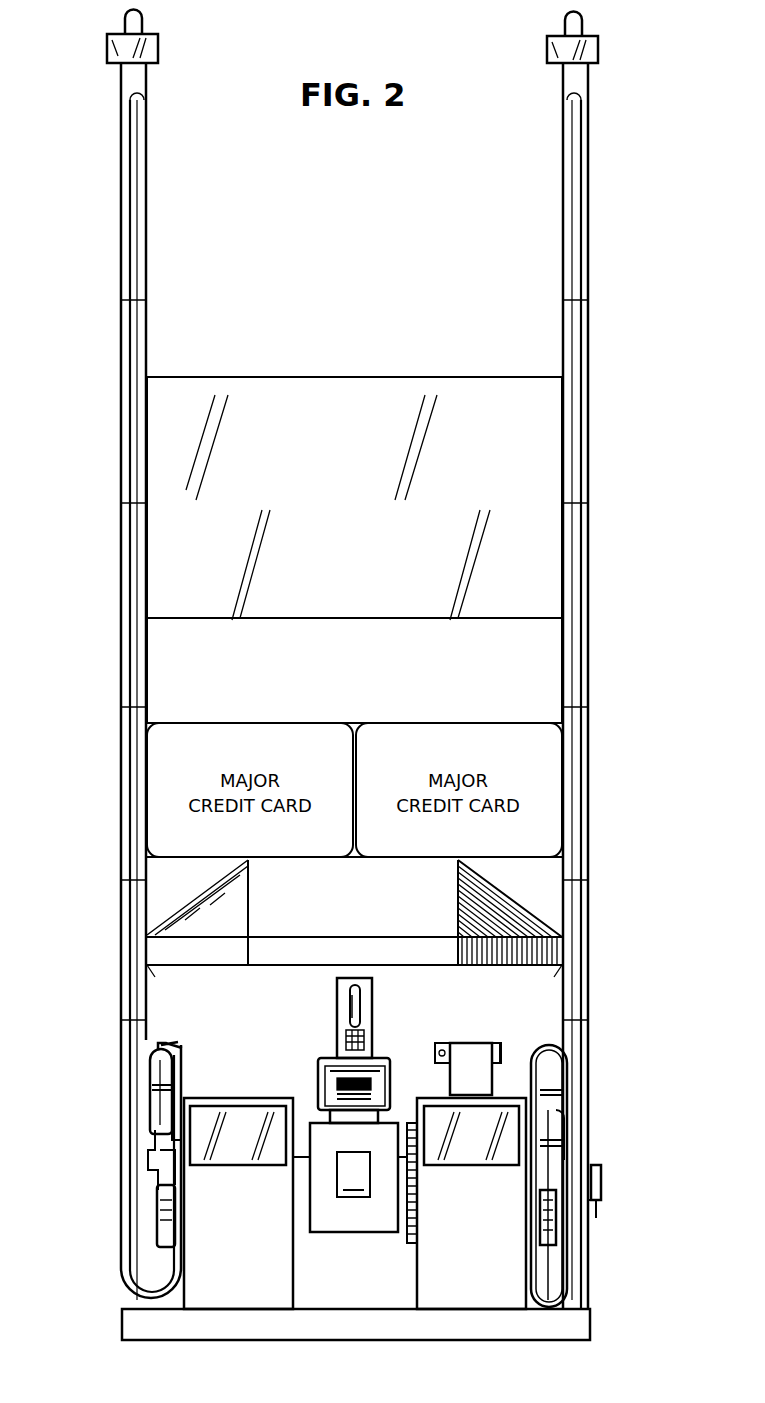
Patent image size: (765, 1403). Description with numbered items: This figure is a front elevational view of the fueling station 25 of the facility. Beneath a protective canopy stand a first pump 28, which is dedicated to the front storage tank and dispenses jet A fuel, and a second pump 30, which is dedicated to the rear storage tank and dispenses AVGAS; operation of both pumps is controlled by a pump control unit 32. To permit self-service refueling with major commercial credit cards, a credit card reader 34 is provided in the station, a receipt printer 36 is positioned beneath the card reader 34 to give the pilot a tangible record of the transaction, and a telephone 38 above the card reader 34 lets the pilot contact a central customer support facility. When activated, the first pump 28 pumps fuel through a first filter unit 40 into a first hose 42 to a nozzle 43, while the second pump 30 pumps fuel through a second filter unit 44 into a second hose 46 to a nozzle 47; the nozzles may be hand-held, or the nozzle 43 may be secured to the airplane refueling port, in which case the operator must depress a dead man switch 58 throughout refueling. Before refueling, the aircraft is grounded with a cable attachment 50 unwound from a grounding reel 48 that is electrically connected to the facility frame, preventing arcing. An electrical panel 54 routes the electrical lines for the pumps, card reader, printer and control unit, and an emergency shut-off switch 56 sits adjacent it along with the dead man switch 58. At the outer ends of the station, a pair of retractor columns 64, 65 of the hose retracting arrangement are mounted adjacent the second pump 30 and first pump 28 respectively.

The fueling station 25 is at (600, 869).
The first pump 28 is at (219, 1274).
The second pump 30 is at (457, 1274).
The pump control unit 32 is at (410, 1243).
The credit card reader 34 is at (320, 1076).
The receipt printer 36 is at (360, 1232).
The telephone 38 is at (337, 1006).
The first filter unit 40 is at (158, 1220).
The first hose 42 is at (121, 537).
The nozzle 43 is at (160, 1150).
The second filter unit 44 is at (550, 1240).
The second hose 46 is at (590, 518).
The nozzle 47 is at (545, 1150).
The grounding reel 48 is at (600, 1166).
The cable attachment 50 is at (598, 1218).
The electrical panel 54 is at (478, 1080).
The emergency shut-off switch 56 is at (440, 1043).
The dead man switch 58 is at (497, 1043).
The retractor column 64 is at (590, 232).
The retractor column 65 is at (121, 232).